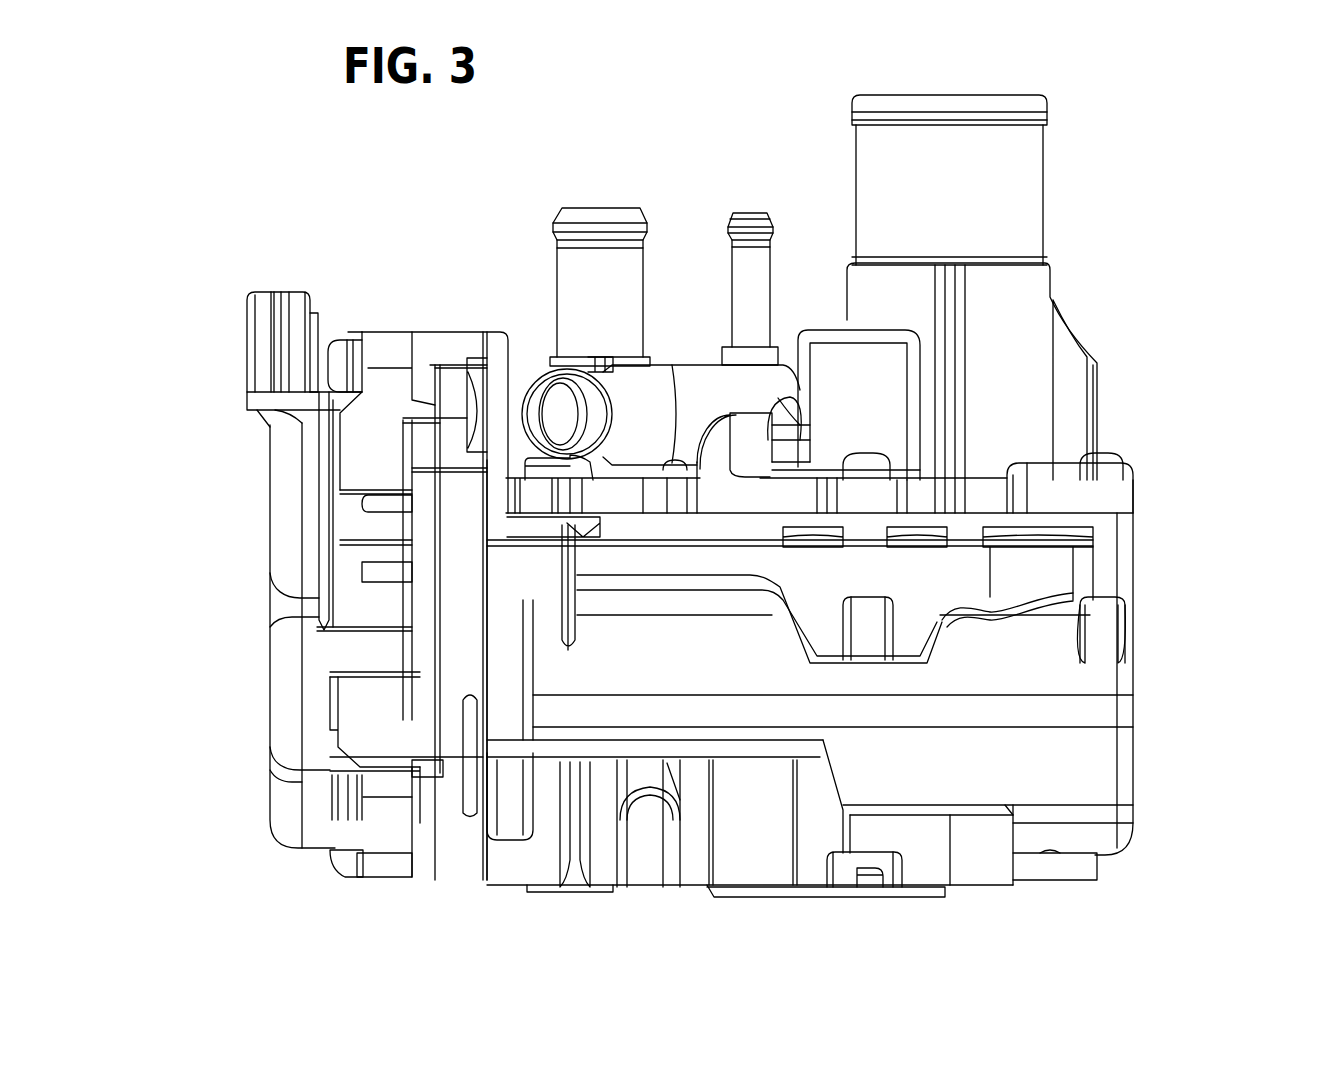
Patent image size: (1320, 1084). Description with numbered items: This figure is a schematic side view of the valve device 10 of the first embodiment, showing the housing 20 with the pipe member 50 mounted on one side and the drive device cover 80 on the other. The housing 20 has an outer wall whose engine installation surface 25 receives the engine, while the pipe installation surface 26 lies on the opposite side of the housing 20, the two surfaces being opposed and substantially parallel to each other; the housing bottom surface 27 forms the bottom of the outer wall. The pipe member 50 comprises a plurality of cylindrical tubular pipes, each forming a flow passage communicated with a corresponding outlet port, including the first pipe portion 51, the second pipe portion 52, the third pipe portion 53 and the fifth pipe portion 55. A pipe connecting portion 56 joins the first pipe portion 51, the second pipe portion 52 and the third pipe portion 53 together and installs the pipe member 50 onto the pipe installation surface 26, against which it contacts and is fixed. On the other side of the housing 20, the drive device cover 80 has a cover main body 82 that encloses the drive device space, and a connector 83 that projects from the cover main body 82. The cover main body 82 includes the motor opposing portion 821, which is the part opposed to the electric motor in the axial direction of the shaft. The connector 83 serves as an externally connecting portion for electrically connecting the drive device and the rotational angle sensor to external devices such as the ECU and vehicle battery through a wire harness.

The valve device 10 is at (282, 204).
The housing 20 is at (1140, 830).
The engine installation surface 25 is at (972, 890).
The pipe installation surface 26 is at (868, 512).
The housing bottom surface 27 is at (1137, 668).
The pipe member 50 is at (1048, 181).
The first pipe portion 51 is at (972, 96).
The second pipe portion 52 is at (690, 362).
The third pipe portion 53 is at (600, 207).
The fifth pipe portion 55 is at (750, 213).
The pipe connecting portion 56 is at (799, 494).
The drive device cover 80 is at (291, 858).
The cover main body 82 is at (268, 618).
The motor opposing portion 821 is at (268, 490).
The connector 83 is at (248, 320).